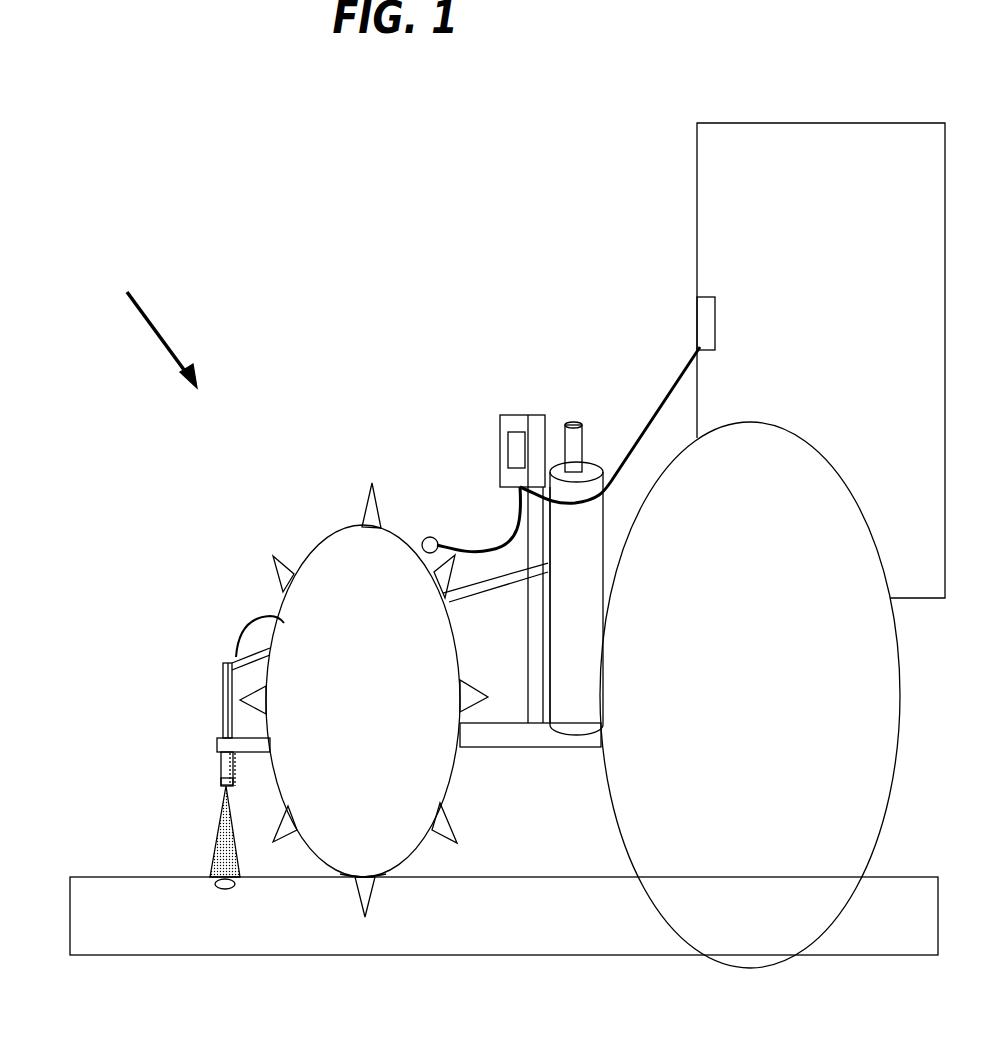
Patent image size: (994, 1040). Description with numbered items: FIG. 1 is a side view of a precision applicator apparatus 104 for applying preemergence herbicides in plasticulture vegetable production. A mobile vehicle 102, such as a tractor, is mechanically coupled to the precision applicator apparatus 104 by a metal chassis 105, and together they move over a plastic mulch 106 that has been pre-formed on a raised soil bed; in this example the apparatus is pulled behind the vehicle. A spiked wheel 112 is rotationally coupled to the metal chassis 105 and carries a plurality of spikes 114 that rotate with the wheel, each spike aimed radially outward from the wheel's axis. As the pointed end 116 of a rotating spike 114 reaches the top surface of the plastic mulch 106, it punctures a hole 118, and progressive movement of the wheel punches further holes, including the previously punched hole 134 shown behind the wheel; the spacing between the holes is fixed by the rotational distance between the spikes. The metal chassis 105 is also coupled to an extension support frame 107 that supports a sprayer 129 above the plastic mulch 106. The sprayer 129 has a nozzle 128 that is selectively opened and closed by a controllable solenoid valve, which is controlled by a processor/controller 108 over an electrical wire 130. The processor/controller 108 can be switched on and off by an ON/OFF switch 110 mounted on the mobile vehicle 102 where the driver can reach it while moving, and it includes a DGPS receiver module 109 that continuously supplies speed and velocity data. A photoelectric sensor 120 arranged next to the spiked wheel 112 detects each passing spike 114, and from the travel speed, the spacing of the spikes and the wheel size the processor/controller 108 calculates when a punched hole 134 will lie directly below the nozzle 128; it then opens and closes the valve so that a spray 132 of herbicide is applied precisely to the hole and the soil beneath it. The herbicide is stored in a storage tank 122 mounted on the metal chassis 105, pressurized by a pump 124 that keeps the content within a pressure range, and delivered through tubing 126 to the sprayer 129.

The mobile vehicle 102 is at (760, 123).
The precision applicator apparatus 104 is at (148, 324).
The metal chassis 105 is at (497, 745).
The plastic mulch 106 is at (145, 877).
The extension support frame 107 is at (233, 788).
The processor/controller 108 is at (502, 420).
The DGPS receiver module 109 is at (521, 418).
The ON/OFF switch 110 is at (698, 313).
The spiked wheel 112 is at (305, 530).
The spike 114 is at (380, 497).
The pointed end 116 is at (375, 895).
The hole 118 is at (355, 882).
The photoelectric sensor 120 is at (424, 537).
The storage tank 122 is at (555, 700).
The pump 124 is at (584, 440).
The tubing 126 is at (220, 693).
The nozzle 128 is at (215, 785).
The sprayer 129 is at (220, 778).
The electrical wire 130 is at (238, 630).
The spray 132 is at (212, 866).
The previously punched hole 134 is at (232, 887).